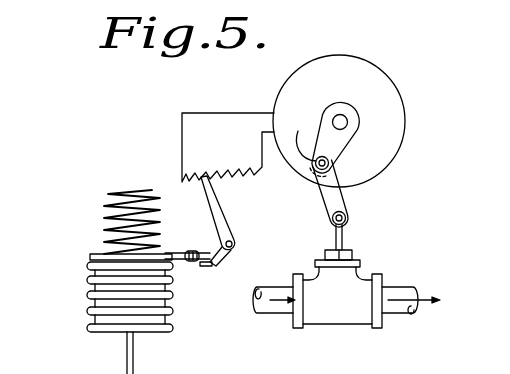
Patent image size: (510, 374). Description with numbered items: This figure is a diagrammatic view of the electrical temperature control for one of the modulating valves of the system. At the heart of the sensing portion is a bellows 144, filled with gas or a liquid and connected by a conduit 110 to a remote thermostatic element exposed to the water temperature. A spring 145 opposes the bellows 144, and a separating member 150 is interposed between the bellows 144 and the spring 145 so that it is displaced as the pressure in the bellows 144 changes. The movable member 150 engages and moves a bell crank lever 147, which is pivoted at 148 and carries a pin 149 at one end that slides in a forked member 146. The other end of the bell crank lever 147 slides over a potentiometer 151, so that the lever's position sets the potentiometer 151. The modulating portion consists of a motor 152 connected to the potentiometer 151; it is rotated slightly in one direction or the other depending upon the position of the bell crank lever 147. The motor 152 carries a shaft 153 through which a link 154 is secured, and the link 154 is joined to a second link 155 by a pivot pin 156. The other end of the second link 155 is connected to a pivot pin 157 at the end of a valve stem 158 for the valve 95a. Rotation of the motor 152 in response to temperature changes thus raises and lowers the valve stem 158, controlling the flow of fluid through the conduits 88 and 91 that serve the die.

The motor 152 is at (426, 43).
The potentiometer 151 is at (204, 174).
The shaft 153 is at (348, 82).
The link 154 is at (347, 148).
The second link 155 is at (331, 168).
The pivot pin 156 is at (297, 135).
The pivot pin 157 is at (345, 213).
The valve stem 158 is at (343, 240).
The valve 95a is at (328, 312).
The conduit 88 is at (268, 319).
The conduit 91 is at (402, 314).
The spring 145 is at (104, 199).
The separating member 150 is at (92, 257).
The bellows 144 is at (173, 296).
The conduit 110 is at (134, 353).
The bell crank lever 147 is at (225, 213).
The pivot 148 is at (233, 247).
The forked member 146 is at (203, 224).
The pin 149 is at (196, 264).